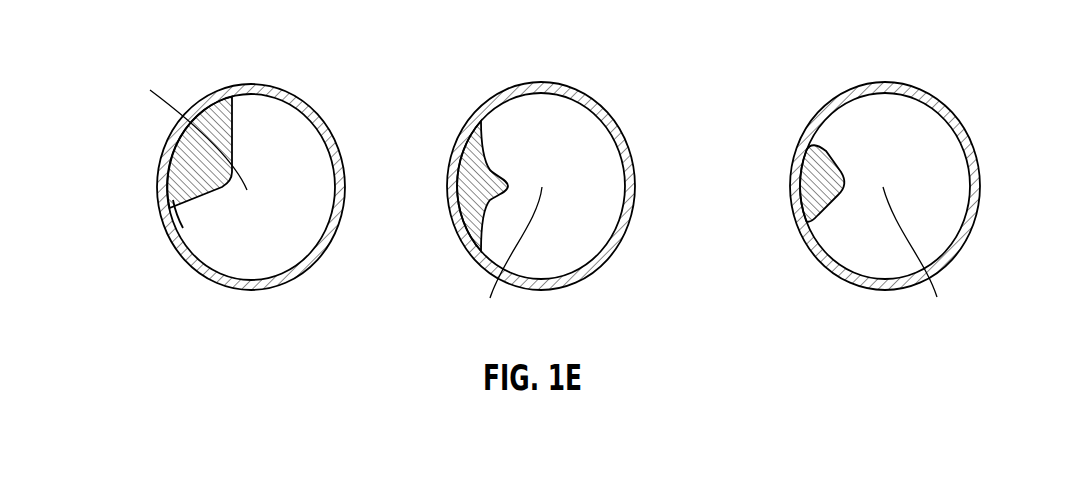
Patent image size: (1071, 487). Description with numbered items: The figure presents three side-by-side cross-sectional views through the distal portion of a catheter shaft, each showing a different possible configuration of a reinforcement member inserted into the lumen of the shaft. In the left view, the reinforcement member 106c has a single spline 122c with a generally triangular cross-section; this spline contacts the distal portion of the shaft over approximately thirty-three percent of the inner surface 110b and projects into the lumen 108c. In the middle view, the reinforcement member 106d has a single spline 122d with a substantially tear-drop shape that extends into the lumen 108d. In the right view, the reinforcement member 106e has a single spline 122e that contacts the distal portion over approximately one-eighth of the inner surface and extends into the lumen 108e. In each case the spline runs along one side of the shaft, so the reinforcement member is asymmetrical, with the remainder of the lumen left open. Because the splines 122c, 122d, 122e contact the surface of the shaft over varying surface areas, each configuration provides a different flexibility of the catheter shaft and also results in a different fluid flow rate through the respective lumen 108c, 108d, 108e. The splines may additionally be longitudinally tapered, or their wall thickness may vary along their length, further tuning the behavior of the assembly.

The reinforcement member 106c is at (210, 187).
The reinforcement member 106d is at (546, 187).
The reinforcement member 106e is at (841, 205).
The lumen 108c is at (187, 127).
The lumen 108d is at (502, 260).
The lumen 108e is at (925, 260).
The inner surface 110b is at (183, 228).
The spline 122c is at (183, 168).
The spline 122d is at (472, 187).
The spline 122e is at (813, 182).